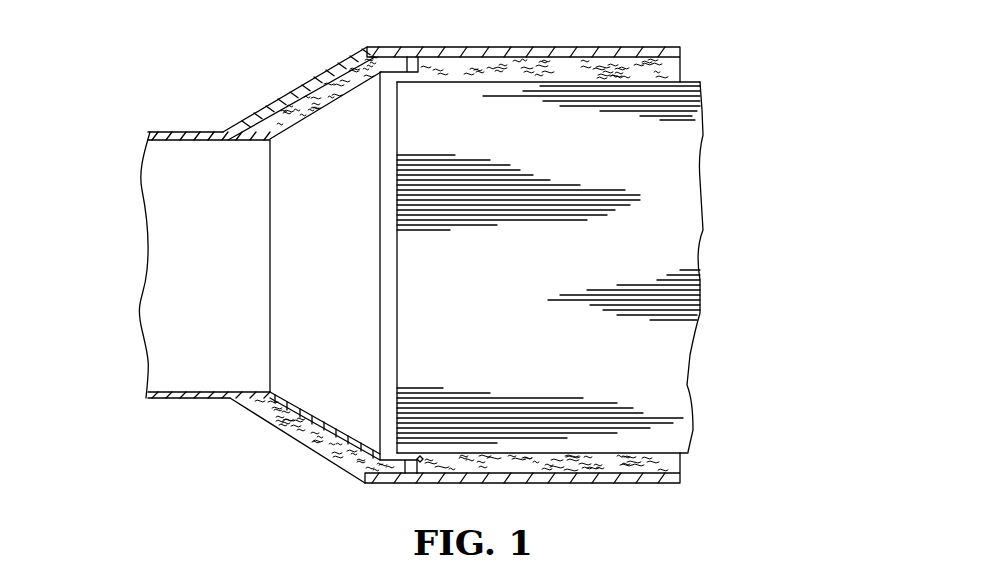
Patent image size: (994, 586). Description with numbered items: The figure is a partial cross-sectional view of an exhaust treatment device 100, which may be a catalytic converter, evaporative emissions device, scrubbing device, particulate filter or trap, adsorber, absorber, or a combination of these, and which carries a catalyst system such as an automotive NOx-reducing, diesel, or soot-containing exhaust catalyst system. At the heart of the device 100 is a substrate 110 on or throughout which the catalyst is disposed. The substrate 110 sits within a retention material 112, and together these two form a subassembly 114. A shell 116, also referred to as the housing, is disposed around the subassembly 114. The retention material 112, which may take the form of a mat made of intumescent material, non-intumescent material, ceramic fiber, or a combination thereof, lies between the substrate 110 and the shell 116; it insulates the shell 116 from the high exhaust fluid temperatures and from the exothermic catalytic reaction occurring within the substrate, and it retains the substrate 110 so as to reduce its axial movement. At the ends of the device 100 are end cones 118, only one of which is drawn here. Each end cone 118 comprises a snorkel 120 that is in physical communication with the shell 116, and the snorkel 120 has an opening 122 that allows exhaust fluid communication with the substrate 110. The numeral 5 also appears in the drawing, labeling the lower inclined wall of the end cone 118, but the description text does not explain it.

The assembly 100 is at (190, 52).
The housing body 110 is at (706, 108).
The top wall panel 112 is at (600, 70).
The interior chamber with fins 114 is at (493, 271).
The joint fastener 116 is at (417, 48).
The inclined transition panel 118 is at (315, 105).
The bottom wall of inlet duct 120 is at (177, 398).
The inlet duct 122 is at (140, 210).
The lower inclined panel 5 is at (327, 457).